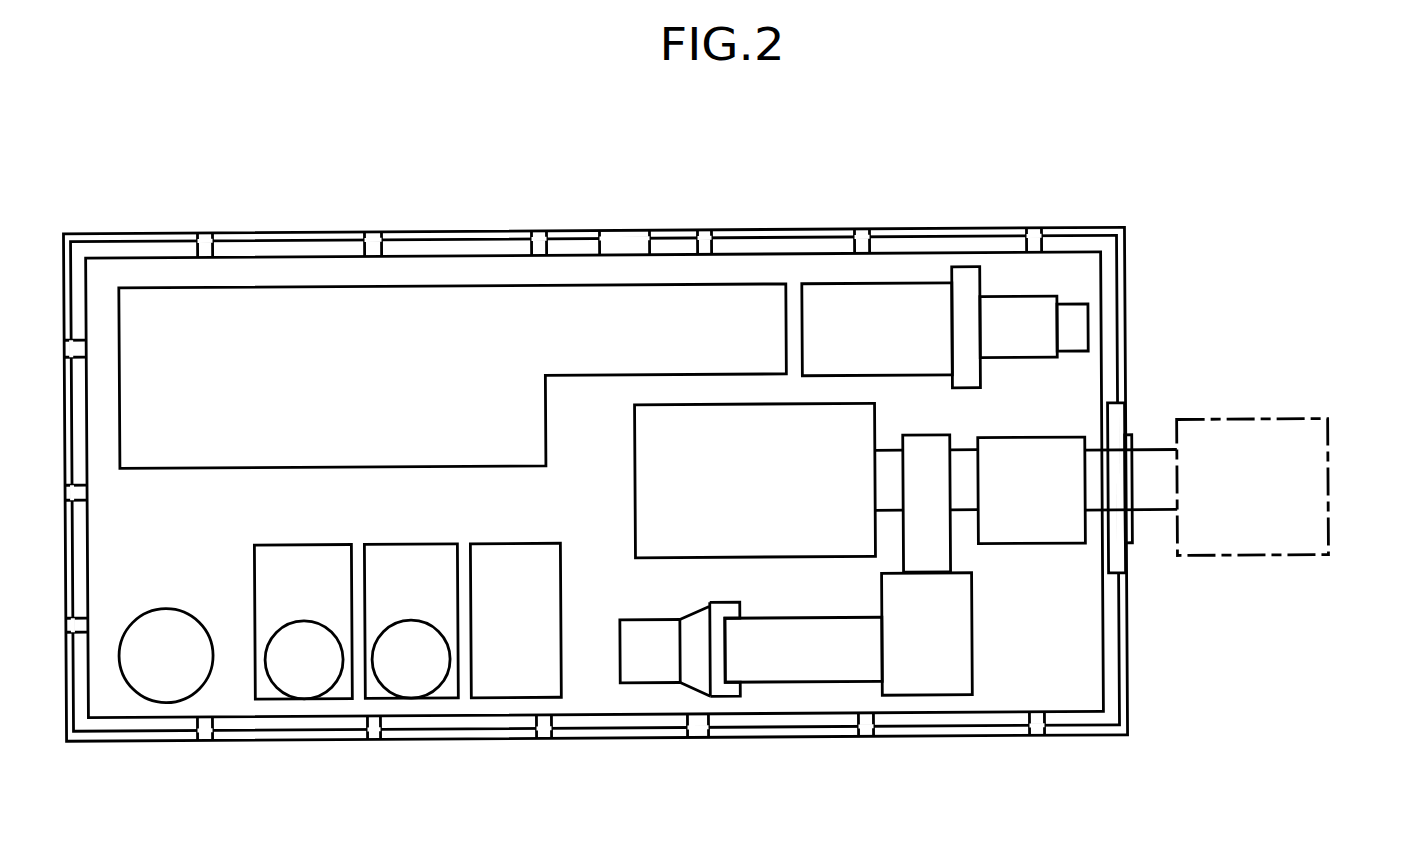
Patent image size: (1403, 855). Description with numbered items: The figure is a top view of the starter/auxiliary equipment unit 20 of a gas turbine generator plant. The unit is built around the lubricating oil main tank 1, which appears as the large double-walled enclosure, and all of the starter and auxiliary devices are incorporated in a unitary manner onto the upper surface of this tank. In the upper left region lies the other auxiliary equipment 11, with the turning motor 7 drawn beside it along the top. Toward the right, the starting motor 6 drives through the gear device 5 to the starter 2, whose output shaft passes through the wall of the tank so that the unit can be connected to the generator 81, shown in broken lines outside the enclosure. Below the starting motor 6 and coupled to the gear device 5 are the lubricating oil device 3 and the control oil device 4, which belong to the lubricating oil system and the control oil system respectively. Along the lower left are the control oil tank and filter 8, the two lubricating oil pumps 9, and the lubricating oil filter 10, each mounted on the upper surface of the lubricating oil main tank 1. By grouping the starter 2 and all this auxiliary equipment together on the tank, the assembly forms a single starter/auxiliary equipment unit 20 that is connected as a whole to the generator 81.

The starter/auxiliary equipment unit 20 is at (190, 220).
The lubricating oil main tank 1 is at (391, 232).
The other auxiliary equipment 11 is at (572, 302).
The turning motor 7 is at (866, 288).
The starting motor 6 is at (656, 553).
The gear device 5 is at (967, 655).
The starter 2 is at (1072, 443).
The generator 81 is at (1195, 556).
The lubricating oil device 3 is at (813, 672).
The control oil device 4 is at (697, 677).
The lubricating oil filter 10 is at (158, 688).
The lubricating oil pumps 9 is at (297, 690).
The control oil tank and filter 8 is at (498, 688).